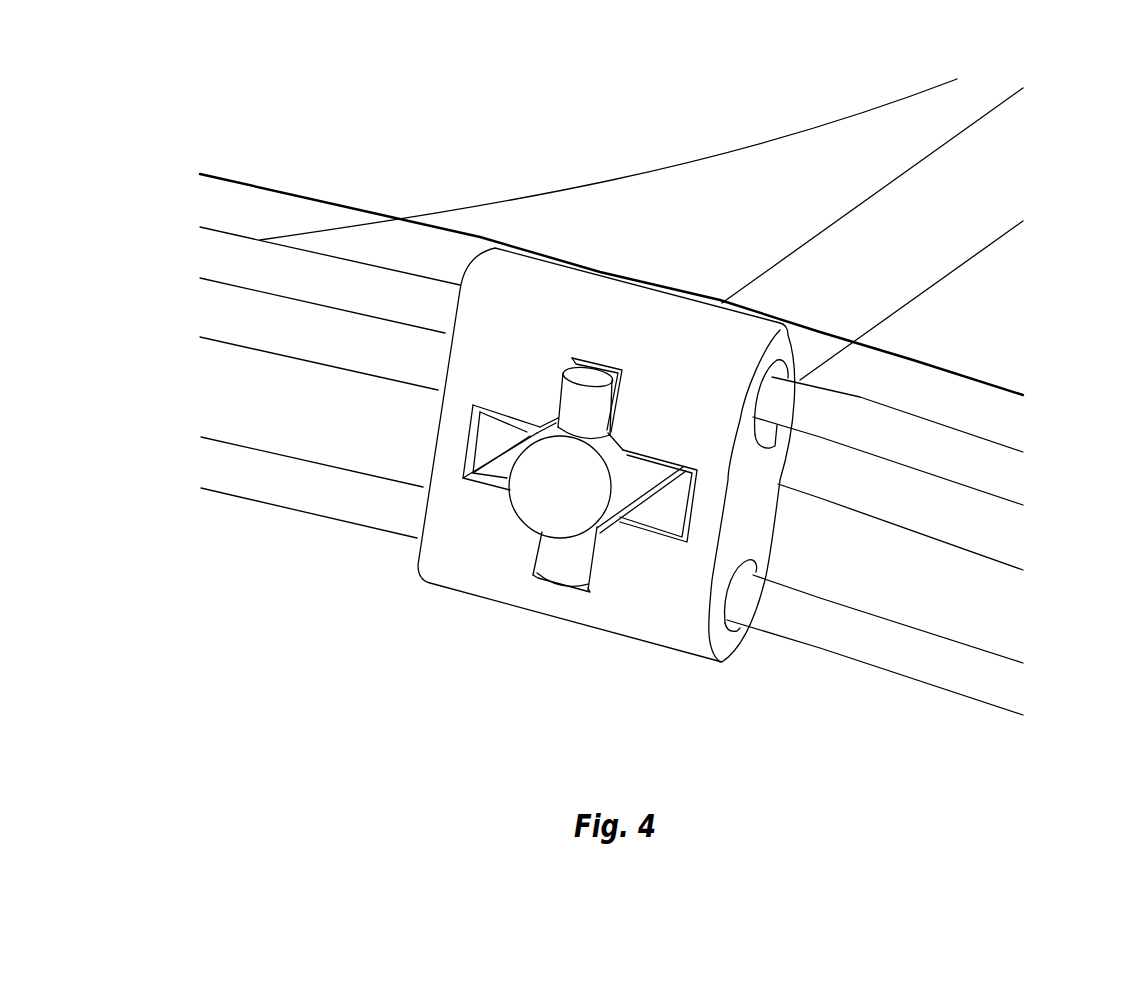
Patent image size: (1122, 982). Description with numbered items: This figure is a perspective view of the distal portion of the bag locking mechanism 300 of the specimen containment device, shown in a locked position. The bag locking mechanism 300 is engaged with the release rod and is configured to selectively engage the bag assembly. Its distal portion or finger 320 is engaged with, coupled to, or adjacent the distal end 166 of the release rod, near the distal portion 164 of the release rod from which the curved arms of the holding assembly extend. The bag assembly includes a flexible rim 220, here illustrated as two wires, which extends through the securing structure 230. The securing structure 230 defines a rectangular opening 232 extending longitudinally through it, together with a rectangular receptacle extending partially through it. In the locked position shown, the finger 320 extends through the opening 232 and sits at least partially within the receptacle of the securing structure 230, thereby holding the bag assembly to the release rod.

The bag locking mechanism 300 is at (654, 383).
The rim 220 is at (398, 294).
The distal portion of release rod 164 is at (963, 233).
The securing structure 230 is at (546, 605).
The opening 232 is at (492, 445).
The distal end of release rod 166 is at (618, 492).
The distal portion 320 is at (585, 402).